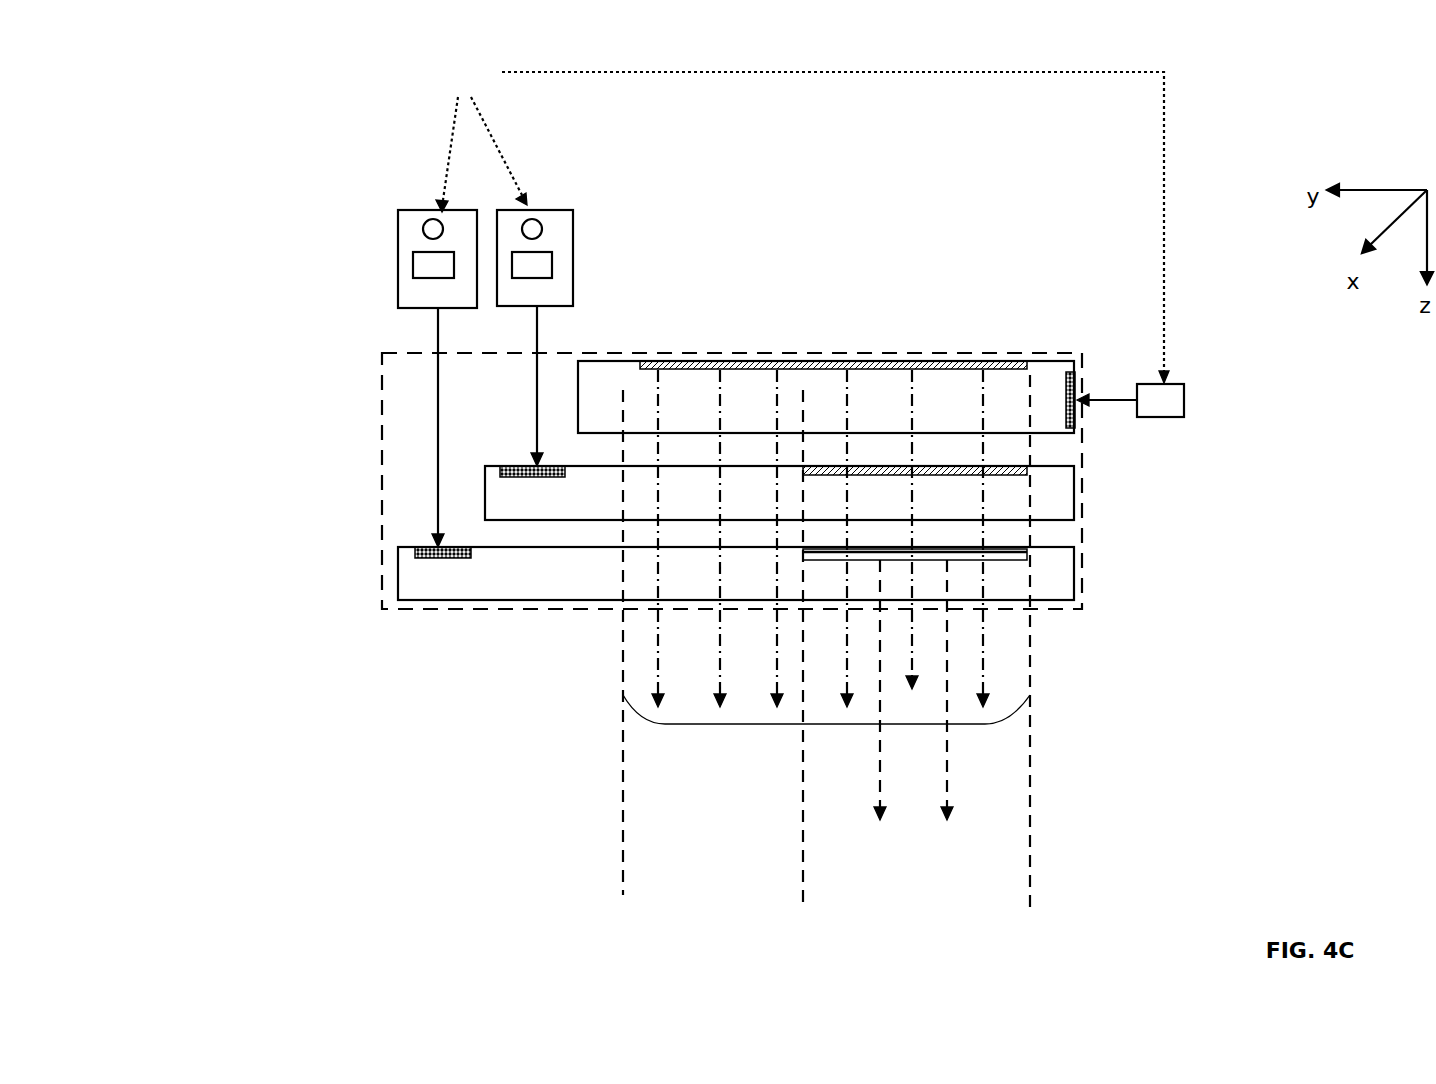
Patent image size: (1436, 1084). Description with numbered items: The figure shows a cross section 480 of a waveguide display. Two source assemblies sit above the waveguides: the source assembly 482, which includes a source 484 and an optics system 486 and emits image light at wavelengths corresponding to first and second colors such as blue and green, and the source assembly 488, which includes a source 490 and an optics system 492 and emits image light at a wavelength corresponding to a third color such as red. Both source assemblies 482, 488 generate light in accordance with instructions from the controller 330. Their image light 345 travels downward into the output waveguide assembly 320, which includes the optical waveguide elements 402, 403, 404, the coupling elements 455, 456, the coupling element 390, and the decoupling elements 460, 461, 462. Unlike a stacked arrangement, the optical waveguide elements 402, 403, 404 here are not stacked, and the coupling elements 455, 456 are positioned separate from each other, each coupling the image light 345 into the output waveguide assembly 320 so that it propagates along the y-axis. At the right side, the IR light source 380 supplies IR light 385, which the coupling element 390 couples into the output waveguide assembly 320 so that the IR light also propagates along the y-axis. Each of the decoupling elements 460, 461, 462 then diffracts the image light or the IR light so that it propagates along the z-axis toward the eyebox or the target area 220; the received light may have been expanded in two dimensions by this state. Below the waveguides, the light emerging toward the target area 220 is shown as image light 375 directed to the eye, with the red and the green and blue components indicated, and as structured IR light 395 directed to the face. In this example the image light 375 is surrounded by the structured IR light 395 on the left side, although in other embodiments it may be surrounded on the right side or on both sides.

The cross section 480 is at (118, 84).
The controller 330 is at (791, 212).
The source assembly 482 is at (424, 208).
The source 484 is at (423, 228).
The optics system 486 is at (413, 268).
The image light 345 is at (612, 328).
The source assembly 488 is at (557, 210).
The source 490 is at (542, 229).
The optics system 492 is at (552, 268).
The output waveguide assembly 320 is at (382, 353).
The optical waveguide element 402 is at (603, 382).
The optical waveguide element 403 is at (487, 482).
The optical waveguide element 404 is at (398, 576).
The coupling element 455 is at (530, 478).
The coupling element 456 is at (446, 556).
The decoupling element 460 is at (930, 363).
The decoupling element 461 is at (961, 468).
The decoupling element 462 is at (803, 548).
The coupling element 390 is at (1055, 363).
The IR light 385 is at (1107, 400).
The IR light source 380 is at (1184, 392).
The image light 375 is at (880, 765).
The structured IR light 395 is at (752, 724).
The target area 220 is at (826, 666).